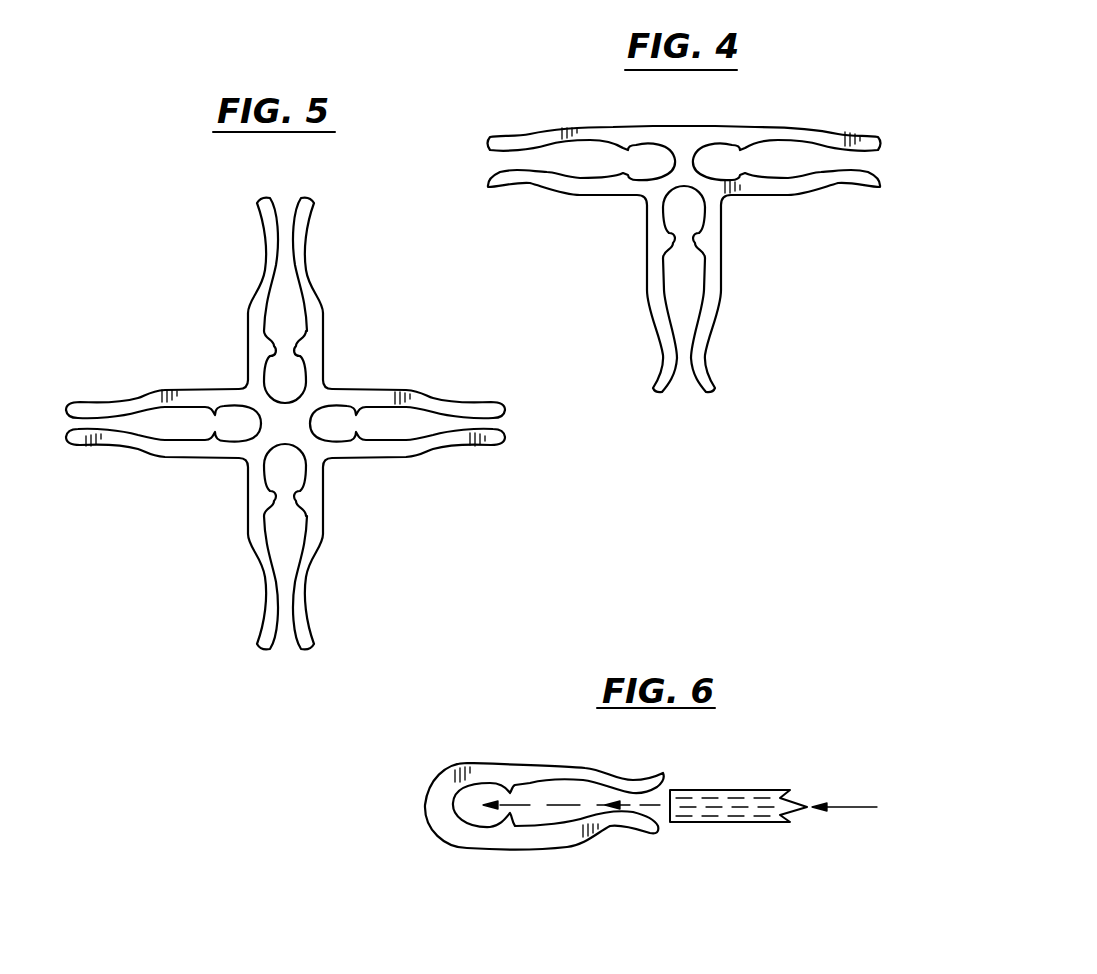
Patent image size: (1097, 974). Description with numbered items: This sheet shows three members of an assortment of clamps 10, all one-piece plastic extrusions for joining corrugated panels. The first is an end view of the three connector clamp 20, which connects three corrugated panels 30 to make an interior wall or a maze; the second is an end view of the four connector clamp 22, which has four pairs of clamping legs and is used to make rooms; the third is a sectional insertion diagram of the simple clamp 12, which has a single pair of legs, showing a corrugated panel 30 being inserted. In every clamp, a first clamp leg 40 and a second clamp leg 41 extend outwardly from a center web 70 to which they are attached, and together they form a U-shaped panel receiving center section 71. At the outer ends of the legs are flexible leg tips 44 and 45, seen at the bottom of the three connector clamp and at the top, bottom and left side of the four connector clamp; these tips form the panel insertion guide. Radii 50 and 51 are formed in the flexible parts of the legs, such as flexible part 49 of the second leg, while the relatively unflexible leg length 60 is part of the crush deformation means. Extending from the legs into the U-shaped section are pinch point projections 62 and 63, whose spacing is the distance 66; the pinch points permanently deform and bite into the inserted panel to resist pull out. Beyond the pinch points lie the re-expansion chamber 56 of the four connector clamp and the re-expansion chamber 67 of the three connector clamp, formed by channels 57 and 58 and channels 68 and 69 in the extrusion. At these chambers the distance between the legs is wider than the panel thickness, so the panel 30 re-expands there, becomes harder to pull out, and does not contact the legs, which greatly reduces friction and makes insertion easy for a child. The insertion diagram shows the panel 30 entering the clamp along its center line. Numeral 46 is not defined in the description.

In FIG. 6, the clamp 10 is at (467, 848).
In FIG. 6, the simple clamp 12 is at (514, 852).
In FIG. 4, the three connector clamp 20 is at (790, 124).
In FIG. 5, the four connector clamp 22 is at (248, 310).
In FIG. 6, the corrugated panel 30 is at (740, 790).
In FIG. 6, the first clamp leg 40 is at (590, 767).
In FIG. 6, the second clamp leg 41 is at (612, 833).
In FIG. 4, the flexible leg tip 44 is at (657, 397).
In FIG. 5, the flexible leg tip 44 is at (313, 198).
In FIG. 4, the flexible leg tip 45 is at (703, 397).
In FIG. 5, the flexible leg tip 45 is at (262, 200).
In FIG. 6, the free end 46 is at (660, 775).
In FIG. 5, the flexible part 49 is at (350, 473).
In FIG. 4, the radius 50 is at (660, 352).
In FIG. 5, the radius 50 is at (307, 237).
In FIG. 4, the radius 51 is at (703, 350).
In FIG. 5, the radius 51 is at (262, 234).
In FIG. 5, the re-expansion chamber 56 is at (158, 428).
In FIG. 4, the channel 57 is at (790, 147).
In FIG. 4, the channel 58 is at (790, 176).
In FIG. 4, the relatively unflexible leg length 60 is at (755, 118).
In FIG. 5, the pinch point projection 62 is at (300, 347).
In FIG. 5, the pinch point projection 63 is at (268, 343).
In FIG. 4, the distance between pinch points 66 is at (610, 148).
In FIG. 4, the re-expansion chamber 67 is at (657, 152).
In FIG. 4, the channel 68 is at (643, 130).
In FIG. 4, the channel 69 is at (637, 196).
In FIG. 4, the center web 70 is at (687, 170).
In FIG. 5, the center web 70 is at (290, 432).
In FIG. 4, the U-shaped panel receiving center section 71 is at (677, 188).
In FIG. 5, the U-shaped panel receiving center section 71 is at (455, 426).
In FIG. 6, the U-shaped panel receiving center section 71 is at (613, 805).